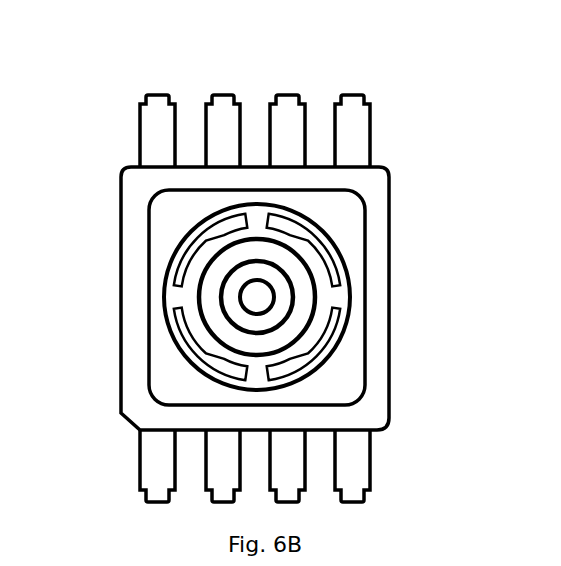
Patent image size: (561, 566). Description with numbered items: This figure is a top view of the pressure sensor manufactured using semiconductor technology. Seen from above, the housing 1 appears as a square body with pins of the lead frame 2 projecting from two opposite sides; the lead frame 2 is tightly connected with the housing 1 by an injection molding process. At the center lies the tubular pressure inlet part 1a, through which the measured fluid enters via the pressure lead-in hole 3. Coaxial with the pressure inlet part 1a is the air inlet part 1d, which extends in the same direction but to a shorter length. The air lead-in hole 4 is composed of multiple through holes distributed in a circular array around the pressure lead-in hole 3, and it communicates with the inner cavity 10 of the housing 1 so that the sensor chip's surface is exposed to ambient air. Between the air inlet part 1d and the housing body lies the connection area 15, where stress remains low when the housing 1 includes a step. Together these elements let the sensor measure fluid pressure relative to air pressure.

The housing 1 is at (380, 237).
The pressure inlet part 1a is at (230, 277).
The air inlet part 1d is at (305, 348).
The lead frame 2 is at (177, 128).
The pressure lead-in hole 3 is at (267, 299).
The air lead-in hole 4 is at (275, 376).
The inner cavity 10 is at (173, 217).
The connection area 15 is at (247, 377).